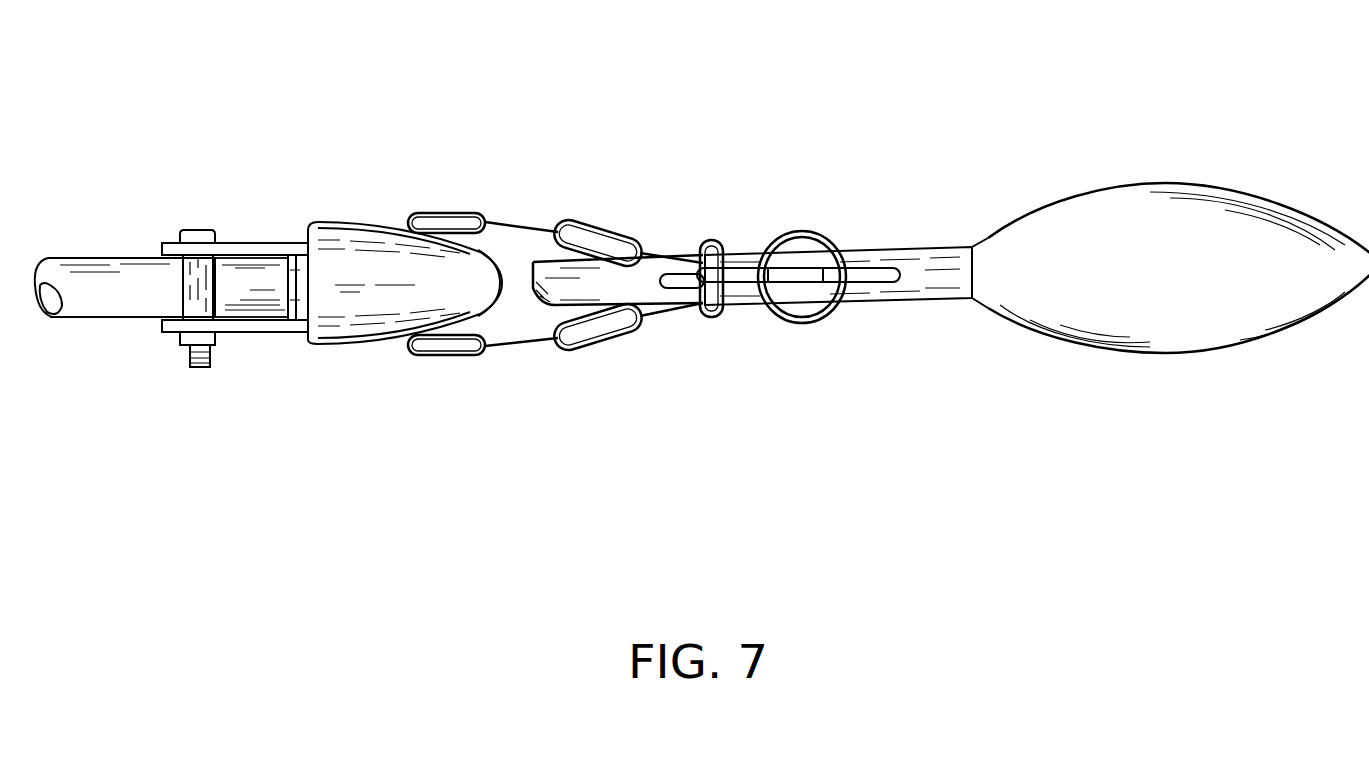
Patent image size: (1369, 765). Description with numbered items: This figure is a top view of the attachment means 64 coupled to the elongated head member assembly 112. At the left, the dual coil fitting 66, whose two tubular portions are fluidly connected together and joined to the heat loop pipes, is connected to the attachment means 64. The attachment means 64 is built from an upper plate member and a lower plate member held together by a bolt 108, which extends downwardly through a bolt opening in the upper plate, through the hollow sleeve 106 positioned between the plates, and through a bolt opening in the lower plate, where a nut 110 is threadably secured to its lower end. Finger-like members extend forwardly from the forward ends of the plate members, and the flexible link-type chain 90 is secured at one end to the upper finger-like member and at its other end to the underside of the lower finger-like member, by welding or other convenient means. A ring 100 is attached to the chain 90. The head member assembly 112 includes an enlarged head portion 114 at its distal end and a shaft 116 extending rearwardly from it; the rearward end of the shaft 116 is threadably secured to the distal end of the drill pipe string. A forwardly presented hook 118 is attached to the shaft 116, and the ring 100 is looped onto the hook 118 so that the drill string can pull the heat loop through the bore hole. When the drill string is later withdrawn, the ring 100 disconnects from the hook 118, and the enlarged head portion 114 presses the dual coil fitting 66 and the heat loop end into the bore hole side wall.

The attachment means 64 is at (296, 216).
The dual coil fitting 66 is at (387, 305).
The flexible link-type chain 90 is at (606, 224).
The ring 100 is at (805, 230).
The hollow sleeve 106 is at (218, 287).
The bolt 108 is at (200, 232).
The nut 110 is at (188, 345).
The elongated head member assembly 112 is at (899, 214).
The enlarged head portion 114 is at (1132, 187).
The shaft 116 is at (932, 274).
The hook 118 is at (875, 278).